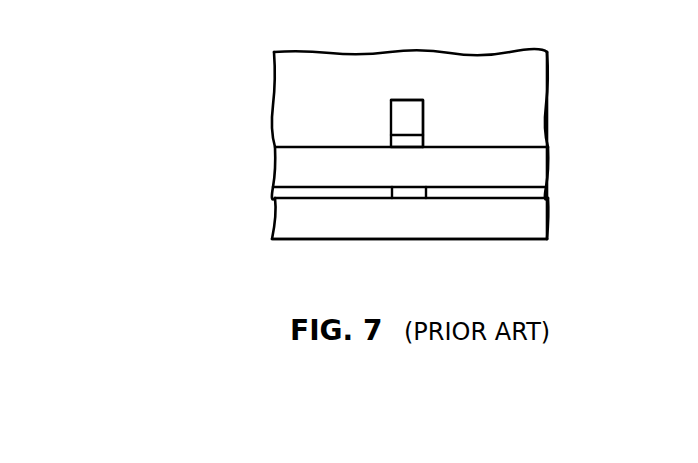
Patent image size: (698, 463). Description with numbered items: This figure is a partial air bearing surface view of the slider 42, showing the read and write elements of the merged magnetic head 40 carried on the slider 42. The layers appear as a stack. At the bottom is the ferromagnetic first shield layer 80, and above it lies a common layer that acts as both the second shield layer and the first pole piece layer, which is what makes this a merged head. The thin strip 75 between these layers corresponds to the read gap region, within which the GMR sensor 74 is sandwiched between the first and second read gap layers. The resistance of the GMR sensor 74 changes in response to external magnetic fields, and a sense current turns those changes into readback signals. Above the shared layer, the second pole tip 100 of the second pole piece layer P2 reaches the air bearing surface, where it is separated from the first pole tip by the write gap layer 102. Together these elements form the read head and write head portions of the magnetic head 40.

The magnetic head 40 is at (568, 62).
The slider 42 is at (283, 74).
The thin dielectric strip 75 is at (308, 195).
The GMR sensor 74 is at (410, 196).
The first shield layer 80 is at (532, 218).
The second pole tip 100 is at (416, 98).
The second poly layer P2 is at (423, 118).
The write gap layer 102 is at (408, 143).